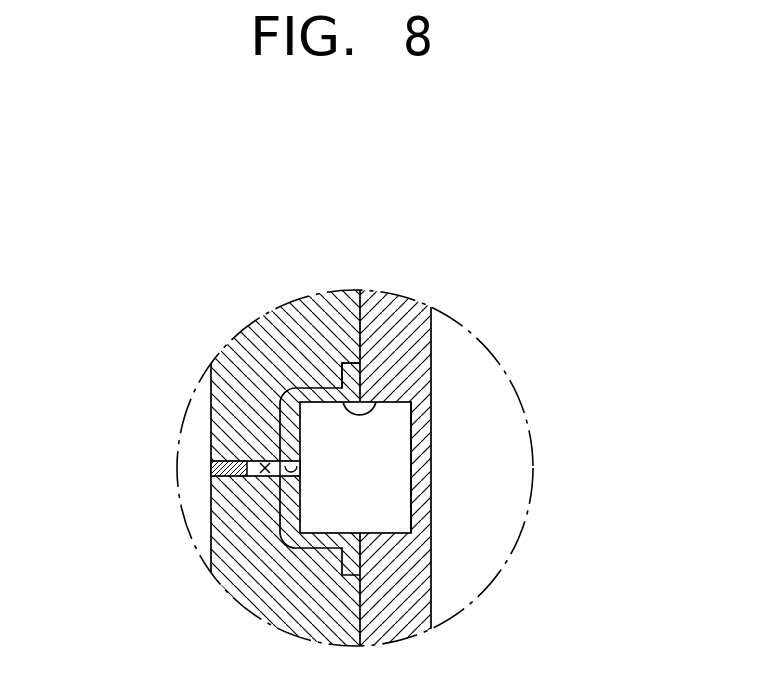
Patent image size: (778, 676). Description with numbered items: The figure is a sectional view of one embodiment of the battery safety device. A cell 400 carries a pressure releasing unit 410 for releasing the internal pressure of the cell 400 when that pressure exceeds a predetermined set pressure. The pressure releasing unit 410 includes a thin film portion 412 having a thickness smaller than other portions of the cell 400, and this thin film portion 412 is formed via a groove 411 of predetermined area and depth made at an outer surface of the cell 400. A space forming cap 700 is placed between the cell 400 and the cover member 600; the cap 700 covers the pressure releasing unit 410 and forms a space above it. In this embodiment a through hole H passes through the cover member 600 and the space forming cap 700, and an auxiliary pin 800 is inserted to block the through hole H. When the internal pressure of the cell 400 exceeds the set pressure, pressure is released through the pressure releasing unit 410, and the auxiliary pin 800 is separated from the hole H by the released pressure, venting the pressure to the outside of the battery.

The cell 400 is at (436, 351).
The pressure releasing unit 410 is at (400, 511).
The groove 411 is at (339, 375).
The thin film portion 412 is at (420, 458).
The cover member 600 is at (373, 604).
The space forming cap 700 is at (278, 386).
The auxiliary pin 800 is at (211, 464).
The through hole H is at (258, 478).